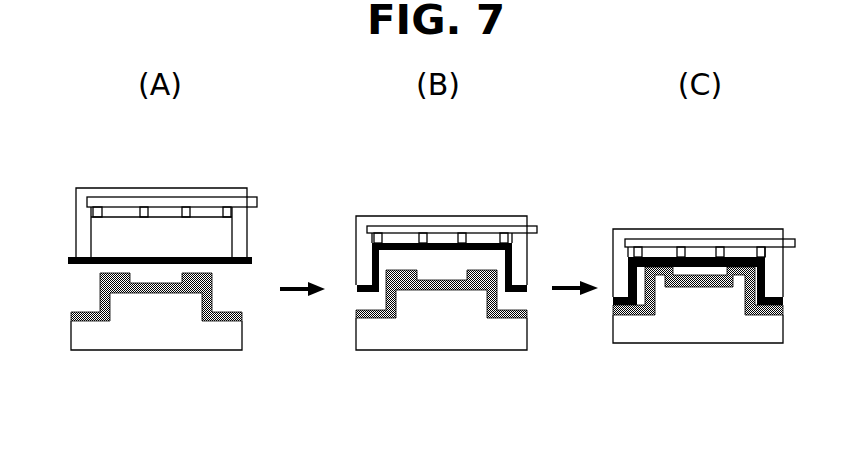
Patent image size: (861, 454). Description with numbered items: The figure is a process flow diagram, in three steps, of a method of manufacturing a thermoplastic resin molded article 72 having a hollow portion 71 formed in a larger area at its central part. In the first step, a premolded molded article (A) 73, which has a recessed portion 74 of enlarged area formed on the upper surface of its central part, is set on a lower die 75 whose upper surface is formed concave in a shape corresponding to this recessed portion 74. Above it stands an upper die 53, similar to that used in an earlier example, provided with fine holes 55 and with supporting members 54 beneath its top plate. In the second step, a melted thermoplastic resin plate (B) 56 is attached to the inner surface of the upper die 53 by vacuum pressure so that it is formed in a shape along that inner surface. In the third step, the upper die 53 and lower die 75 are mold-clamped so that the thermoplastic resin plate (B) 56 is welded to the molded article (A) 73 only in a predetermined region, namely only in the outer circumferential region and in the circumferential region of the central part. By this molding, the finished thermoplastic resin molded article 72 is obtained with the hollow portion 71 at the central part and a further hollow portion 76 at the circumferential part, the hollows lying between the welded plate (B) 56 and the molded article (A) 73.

The upper die 53 is at (103, 195).
The spacer 54 is at (213, 217).
The fine hole 55 is at (142, 214).
The thermoplastic resin plate (B) 56 is at (212, 257).
The hollow portion 71 is at (702, 273).
The thermoplastic resin molded article 72 is at (660, 258).
The molded article (A) 73 is at (100, 298).
The recessed portion 74 is at (148, 283).
The lower die 75 is at (135, 335).
The hollow portion 76 is at (762, 280).